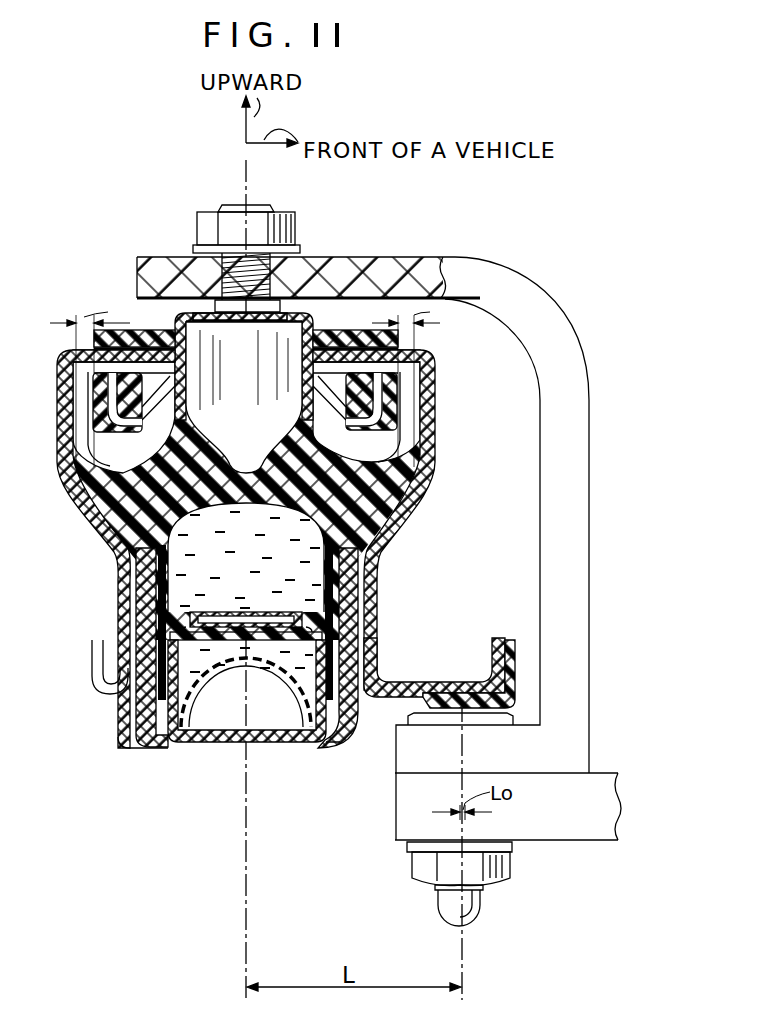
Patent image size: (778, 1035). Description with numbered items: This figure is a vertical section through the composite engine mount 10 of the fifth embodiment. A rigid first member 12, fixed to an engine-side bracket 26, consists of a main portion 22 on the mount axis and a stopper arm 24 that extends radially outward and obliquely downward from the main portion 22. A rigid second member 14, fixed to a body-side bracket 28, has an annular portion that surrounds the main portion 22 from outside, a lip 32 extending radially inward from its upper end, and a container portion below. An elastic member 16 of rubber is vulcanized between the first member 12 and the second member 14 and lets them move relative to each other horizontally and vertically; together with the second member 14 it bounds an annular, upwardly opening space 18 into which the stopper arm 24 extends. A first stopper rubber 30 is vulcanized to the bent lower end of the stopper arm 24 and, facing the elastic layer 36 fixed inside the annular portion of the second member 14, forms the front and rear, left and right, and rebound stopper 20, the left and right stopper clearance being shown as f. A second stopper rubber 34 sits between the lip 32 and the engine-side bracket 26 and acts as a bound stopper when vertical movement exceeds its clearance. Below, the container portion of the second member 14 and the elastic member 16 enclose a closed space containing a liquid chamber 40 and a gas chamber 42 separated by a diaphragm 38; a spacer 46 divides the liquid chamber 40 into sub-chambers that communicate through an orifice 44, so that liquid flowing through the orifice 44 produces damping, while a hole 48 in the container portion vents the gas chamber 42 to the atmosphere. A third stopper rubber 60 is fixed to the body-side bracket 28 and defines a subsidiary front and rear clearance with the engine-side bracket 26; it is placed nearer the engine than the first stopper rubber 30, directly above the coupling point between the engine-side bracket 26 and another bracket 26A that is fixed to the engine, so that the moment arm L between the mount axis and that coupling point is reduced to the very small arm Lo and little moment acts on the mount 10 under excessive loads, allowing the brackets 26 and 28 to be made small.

The composite engine mount 10 is at (264, 492).
The first member 12 is at (213, 335).
The second member 14 is at (57, 417).
The elastic member 16 is at (105, 510).
The space 18 is at (88, 423).
The stopper 20 is at (88, 432).
The main portion 22 is at (275, 338).
The stopper arm 24 is at (333, 327).
The engine-side bracket 26 is at (437, 257).
The another bracket 26A is at (547, 830).
The body-side bracket 28 is at (437, 687).
The first stopper rubber 30 is at (100, 390).
The lip 32 is at (133, 335).
The second stopper rubber 34 is at (383, 252).
The elastic layer 36 is at (85, 395).
The diaphragm 38 is at (215, 748).
The liquid chamber 40 is at (215, 575).
The gas chamber 42 is at (237, 717).
The orifice 44 is at (317, 648).
The spacer 46 is at (215, 600).
The hole 48 is at (210, 743).
The third stopper rubber 60 is at (517, 640).